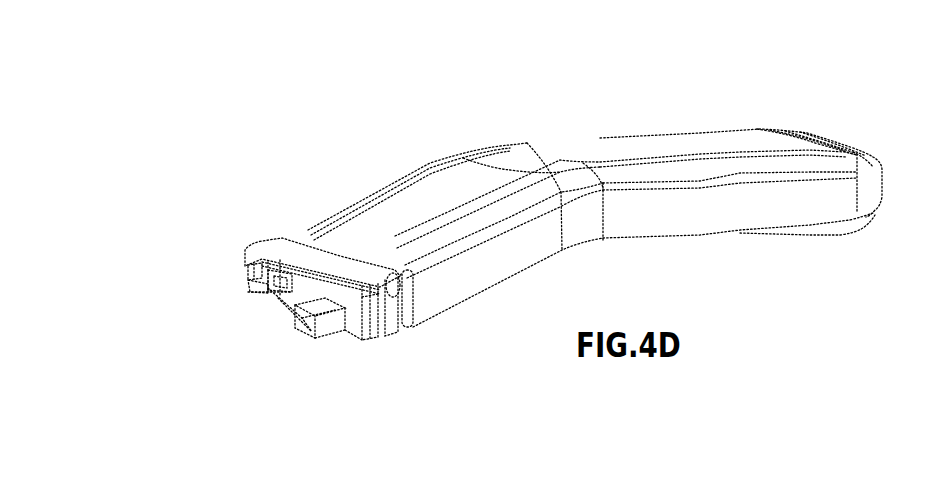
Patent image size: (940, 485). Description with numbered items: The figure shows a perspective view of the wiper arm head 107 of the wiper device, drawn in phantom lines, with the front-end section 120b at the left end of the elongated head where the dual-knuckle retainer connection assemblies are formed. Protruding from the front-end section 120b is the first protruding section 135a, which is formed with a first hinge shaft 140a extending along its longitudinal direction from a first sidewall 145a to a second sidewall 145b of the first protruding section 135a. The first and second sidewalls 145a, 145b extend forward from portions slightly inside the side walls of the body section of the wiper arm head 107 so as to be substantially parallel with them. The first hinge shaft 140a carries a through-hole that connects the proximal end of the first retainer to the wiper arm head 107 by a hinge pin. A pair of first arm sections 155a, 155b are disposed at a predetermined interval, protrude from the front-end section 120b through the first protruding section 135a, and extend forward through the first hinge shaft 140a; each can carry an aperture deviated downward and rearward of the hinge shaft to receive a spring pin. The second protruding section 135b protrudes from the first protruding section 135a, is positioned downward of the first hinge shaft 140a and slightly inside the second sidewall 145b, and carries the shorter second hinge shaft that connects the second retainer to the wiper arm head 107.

The wiper arm head 107 is at (859, 130).
The first hinge shaft 140a is at (331, 261).
The first sidewall 145a is at (247, 268).
The second sidewall 145b is at (385, 310).
The first arm section 155a is at (245, 280).
The first arm section 155b is at (270, 283).
The first protruding section 135a is at (385, 340).
The second protruding section 135b is at (350, 290).
The front-end section 120b is at (408, 310).